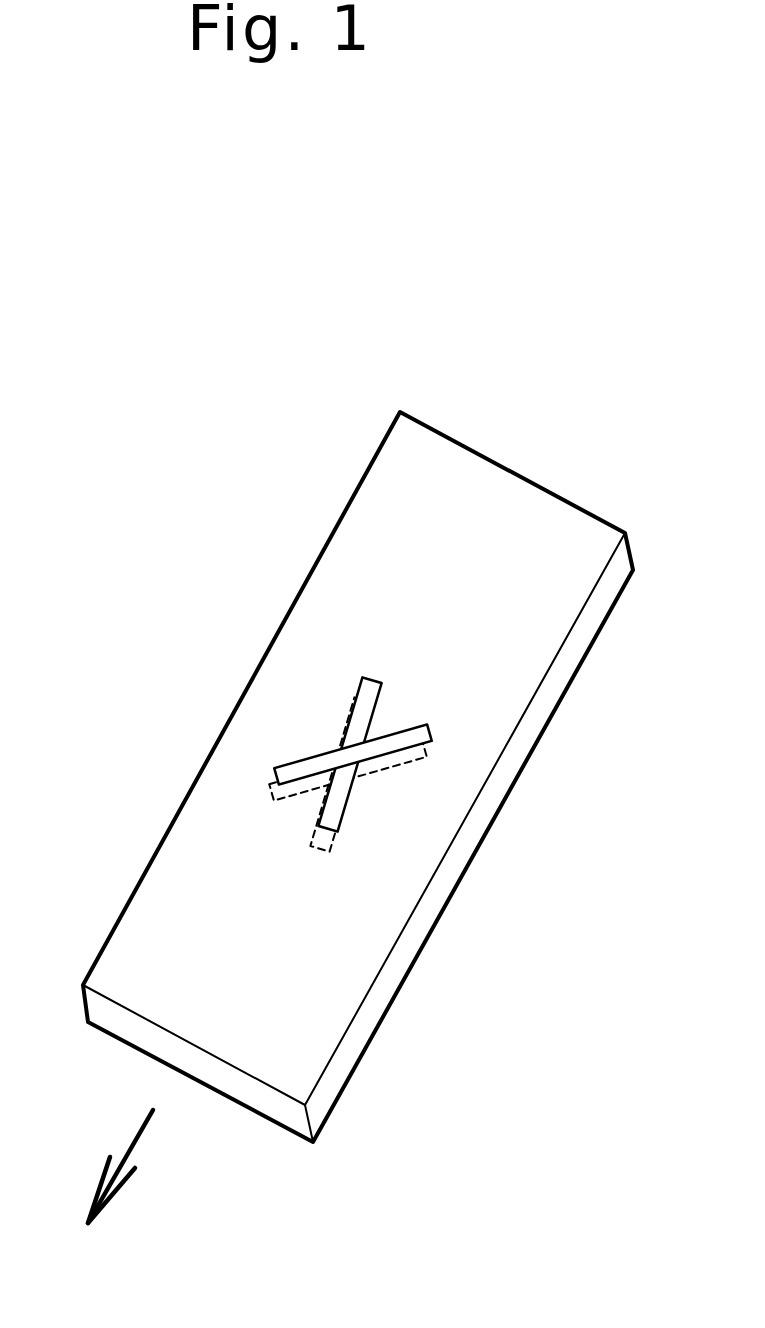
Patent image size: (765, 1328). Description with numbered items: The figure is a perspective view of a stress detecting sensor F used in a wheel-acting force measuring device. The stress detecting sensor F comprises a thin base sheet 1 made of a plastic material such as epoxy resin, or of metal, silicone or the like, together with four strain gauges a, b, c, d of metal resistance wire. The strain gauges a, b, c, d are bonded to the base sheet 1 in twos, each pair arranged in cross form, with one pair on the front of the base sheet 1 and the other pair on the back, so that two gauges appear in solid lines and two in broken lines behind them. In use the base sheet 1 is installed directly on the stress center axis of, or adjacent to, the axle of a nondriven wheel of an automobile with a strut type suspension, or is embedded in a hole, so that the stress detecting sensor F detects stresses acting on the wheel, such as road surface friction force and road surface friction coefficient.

The base sheet 1 is at (462, 480).
The stress detecting sensor F is at (268, 642).
The strain gauge a is at (349, 732).
The strain gauge b is at (357, 723).
The strain gauge c is at (341, 798).
The strain gauge d is at (346, 803).